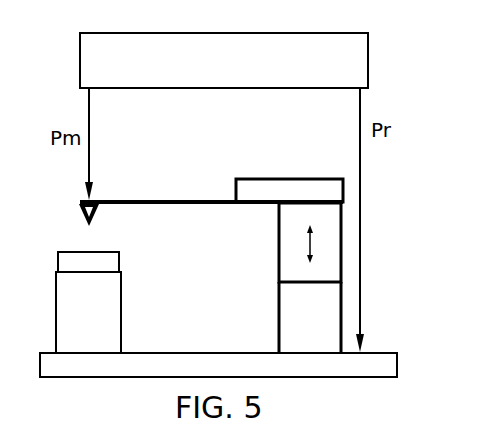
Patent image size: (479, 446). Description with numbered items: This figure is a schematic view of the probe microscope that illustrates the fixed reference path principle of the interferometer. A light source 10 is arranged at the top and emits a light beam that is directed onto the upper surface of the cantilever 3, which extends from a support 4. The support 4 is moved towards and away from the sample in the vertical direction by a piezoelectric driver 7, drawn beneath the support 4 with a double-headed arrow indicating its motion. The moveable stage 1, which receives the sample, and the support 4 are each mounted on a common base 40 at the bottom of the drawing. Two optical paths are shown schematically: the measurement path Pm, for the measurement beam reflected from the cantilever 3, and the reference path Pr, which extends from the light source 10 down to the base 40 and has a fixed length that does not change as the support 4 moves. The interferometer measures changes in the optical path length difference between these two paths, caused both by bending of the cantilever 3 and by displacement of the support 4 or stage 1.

The light source 10 is at (354, 60).
The cantilever 3 is at (170, 201).
The support 4 is at (278, 179).
The piezoelectric driver 7 is at (288, 259).
The moveable stage 1 is at (121, 262).
The base 40 is at (380, 368).